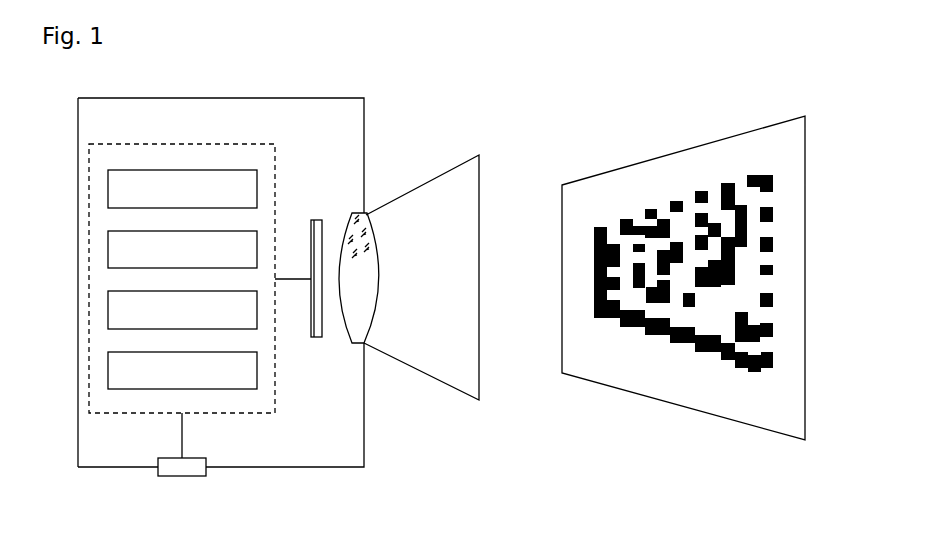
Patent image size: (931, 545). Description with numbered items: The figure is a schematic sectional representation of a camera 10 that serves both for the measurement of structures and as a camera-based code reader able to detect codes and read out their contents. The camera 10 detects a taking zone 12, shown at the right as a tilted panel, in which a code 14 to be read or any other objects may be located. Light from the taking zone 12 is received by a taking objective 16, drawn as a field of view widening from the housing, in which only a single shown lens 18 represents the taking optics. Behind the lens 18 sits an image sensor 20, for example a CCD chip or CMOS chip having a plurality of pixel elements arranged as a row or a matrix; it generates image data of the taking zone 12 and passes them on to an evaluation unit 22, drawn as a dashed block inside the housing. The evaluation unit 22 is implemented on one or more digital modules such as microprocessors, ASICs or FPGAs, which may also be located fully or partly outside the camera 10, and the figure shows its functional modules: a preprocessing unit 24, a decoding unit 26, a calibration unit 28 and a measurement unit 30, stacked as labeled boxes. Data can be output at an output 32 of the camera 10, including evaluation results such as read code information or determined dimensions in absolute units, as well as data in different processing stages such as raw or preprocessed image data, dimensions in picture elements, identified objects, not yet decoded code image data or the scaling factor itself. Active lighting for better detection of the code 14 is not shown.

The camera 10 is at (318, 98).
The taking zone 12 is at (685, 168).
The code 14 is at (727, 287).
The taking objective 16 is at (437, 208).
The lens 18 is at (367, 325).
The image sensor 20 is at (318, 217).
The evaluation unit 22 is at (182, 143).
The preprocessing unit 24 is at (108, 187).
The decoding unit 26 is at (108, 253).
The calibration unit 28 is at (108, 318).
The measurement unit 30 is at (108, 385).
The output 32 is at (190, 467).